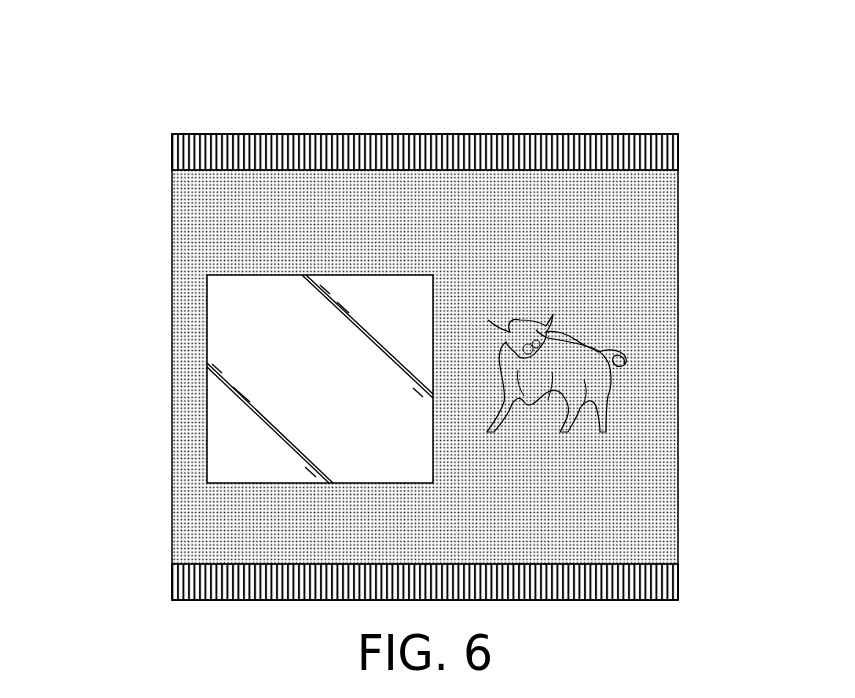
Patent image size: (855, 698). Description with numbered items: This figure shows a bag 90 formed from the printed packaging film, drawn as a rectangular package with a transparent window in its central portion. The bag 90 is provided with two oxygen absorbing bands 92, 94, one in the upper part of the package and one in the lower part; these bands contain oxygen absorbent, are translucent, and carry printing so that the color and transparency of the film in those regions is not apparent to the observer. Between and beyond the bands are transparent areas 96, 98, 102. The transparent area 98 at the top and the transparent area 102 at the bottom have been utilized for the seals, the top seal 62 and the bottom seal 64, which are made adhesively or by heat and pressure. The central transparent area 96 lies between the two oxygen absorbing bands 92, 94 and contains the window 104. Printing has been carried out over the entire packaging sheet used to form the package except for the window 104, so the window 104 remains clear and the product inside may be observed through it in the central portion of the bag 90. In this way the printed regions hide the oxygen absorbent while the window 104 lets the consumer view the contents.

The bag 90 is at (181, 97).
The top seal 62 is at (596, 143).
The bottom seal 64 is at (622, 590).
The transparent area 98 is at (155, 134).
The oxygen absorbing band 92 is at (155, 170).
The transparent area 96 is at (386, 379).
The oxygen absorbing band 94 is at (155, 483).
The transparent area 102 is at (155, 564).
The window 104 is at (336, 389).